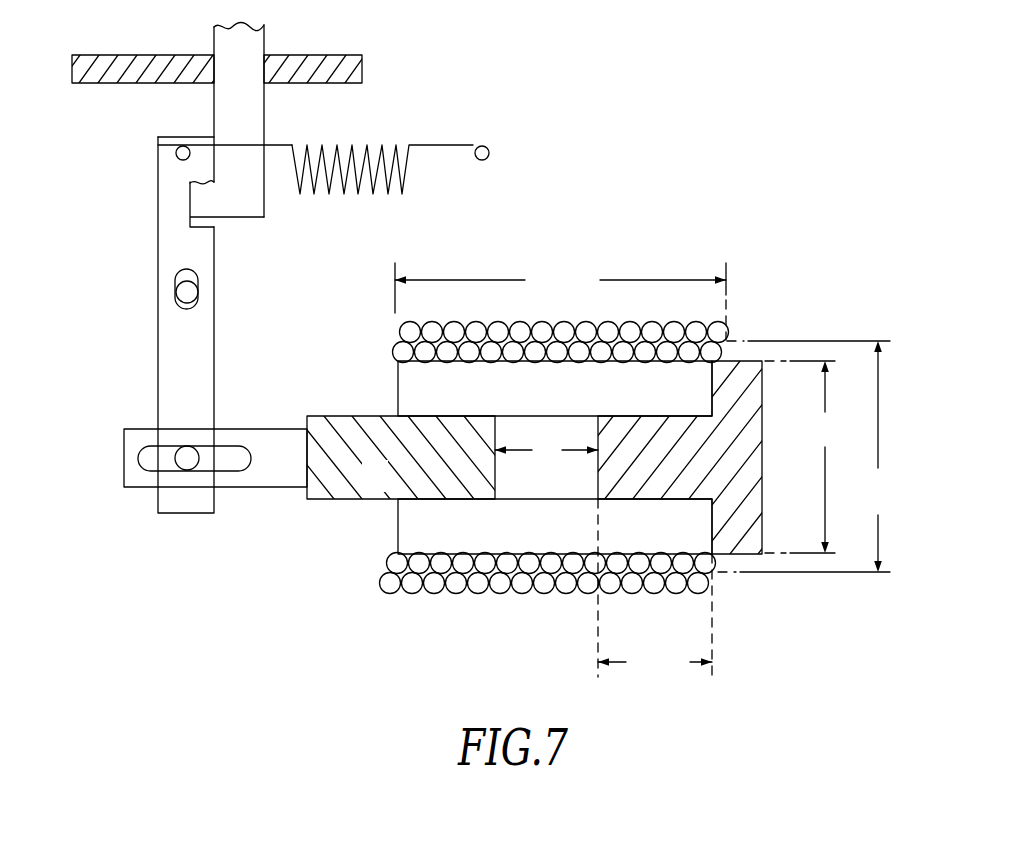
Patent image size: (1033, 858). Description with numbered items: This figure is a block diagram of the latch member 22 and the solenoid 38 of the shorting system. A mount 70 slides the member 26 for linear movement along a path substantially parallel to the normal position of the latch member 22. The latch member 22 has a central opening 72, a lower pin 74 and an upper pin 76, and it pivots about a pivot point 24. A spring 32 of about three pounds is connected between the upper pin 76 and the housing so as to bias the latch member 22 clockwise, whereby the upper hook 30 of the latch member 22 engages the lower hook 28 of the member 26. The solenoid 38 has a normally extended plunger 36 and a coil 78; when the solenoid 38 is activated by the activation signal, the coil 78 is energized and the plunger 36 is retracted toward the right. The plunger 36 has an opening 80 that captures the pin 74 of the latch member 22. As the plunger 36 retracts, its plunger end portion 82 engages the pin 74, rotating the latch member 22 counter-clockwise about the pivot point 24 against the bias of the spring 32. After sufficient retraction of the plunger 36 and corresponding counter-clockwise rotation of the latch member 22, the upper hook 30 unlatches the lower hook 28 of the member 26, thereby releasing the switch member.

The latch member 22 is at (136, 356).
The pivot point 24 is at (191, 303).
The member 26 is at (272, 113).
The lower hook 28 is at (248, 208).
The upper hook 30 is at (200, 170).
The spring 32 is at (357, 190).
The plunger 36 is at (335, 414).
The solenoid 38 is at (702, 247).
The mount 70 is at (126, 60).
The central opening 72 is at (197, 279).
The lower pin 74 is at (184, 446).
The upper pin 76 is at (176, 151).
The coil 78 is at (383, 580).
The opening 80 is at (238, 470).
The plunger end portion 82 is at (140, 459).